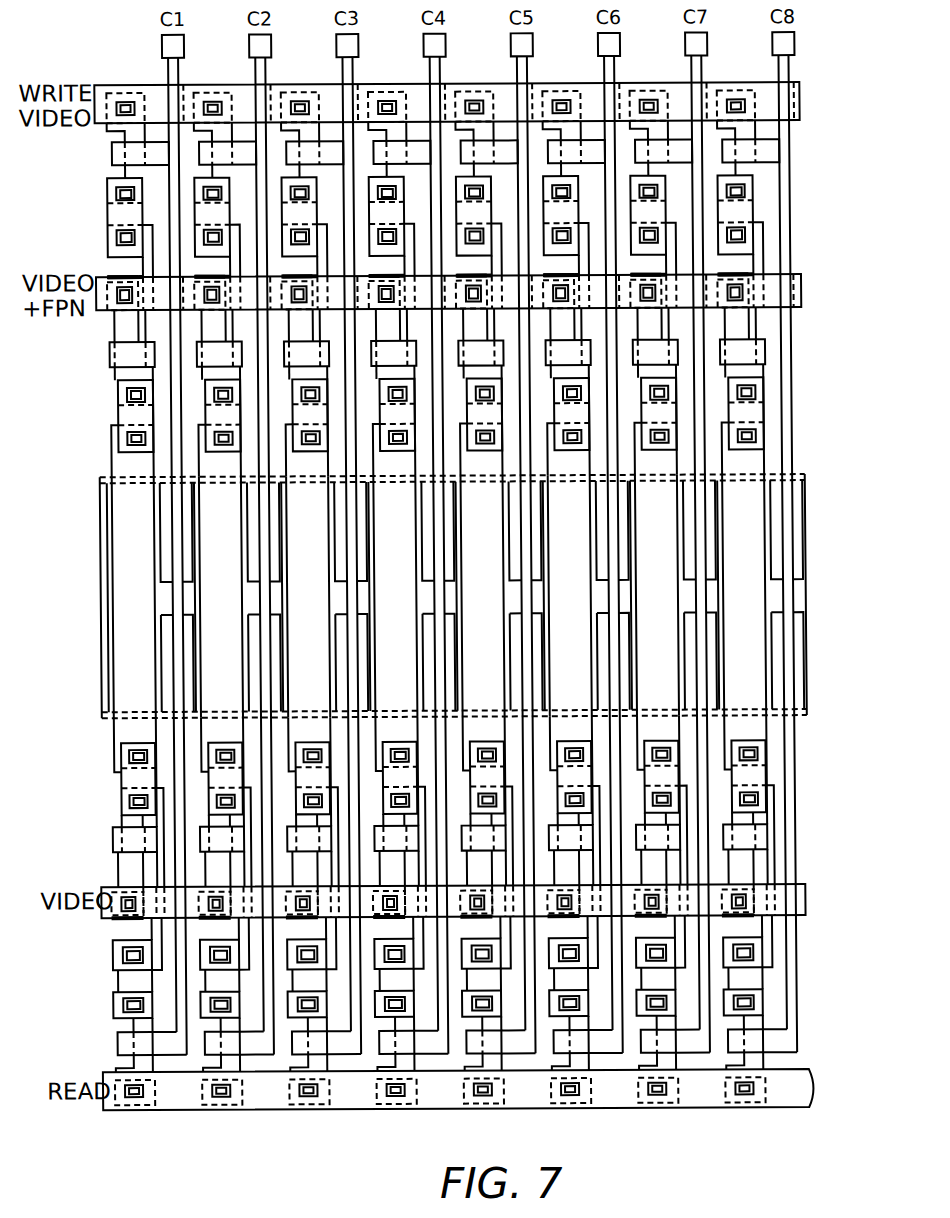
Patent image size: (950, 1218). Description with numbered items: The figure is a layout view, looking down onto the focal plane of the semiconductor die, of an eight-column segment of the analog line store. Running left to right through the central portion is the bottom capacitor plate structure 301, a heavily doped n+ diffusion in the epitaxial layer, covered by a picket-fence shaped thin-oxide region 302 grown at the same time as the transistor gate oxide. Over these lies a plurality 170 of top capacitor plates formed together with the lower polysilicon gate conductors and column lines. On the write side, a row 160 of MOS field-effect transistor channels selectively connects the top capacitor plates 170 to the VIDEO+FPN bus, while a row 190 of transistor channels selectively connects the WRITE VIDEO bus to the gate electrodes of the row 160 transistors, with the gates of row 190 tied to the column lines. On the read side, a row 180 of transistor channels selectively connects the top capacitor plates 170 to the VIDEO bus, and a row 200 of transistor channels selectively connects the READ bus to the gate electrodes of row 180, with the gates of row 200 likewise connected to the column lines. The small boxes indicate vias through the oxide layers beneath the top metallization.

The row of MOS field-effect transistor channels 190 is at (799, 85).
The row of MOS field-effect transistor channels 160 is at (799, 277).
The plurality of top capacitor plates 170 is at (470, 599).
The row of MOS field-effect transistor channels 180 is at (805, 805).
The row of MOS field-effect transistor channels 200 is at (805, 990).
The bottom capacitor plate structure 301 is at (100, 615).
The thin-oxide region 302 is at (100, 572).